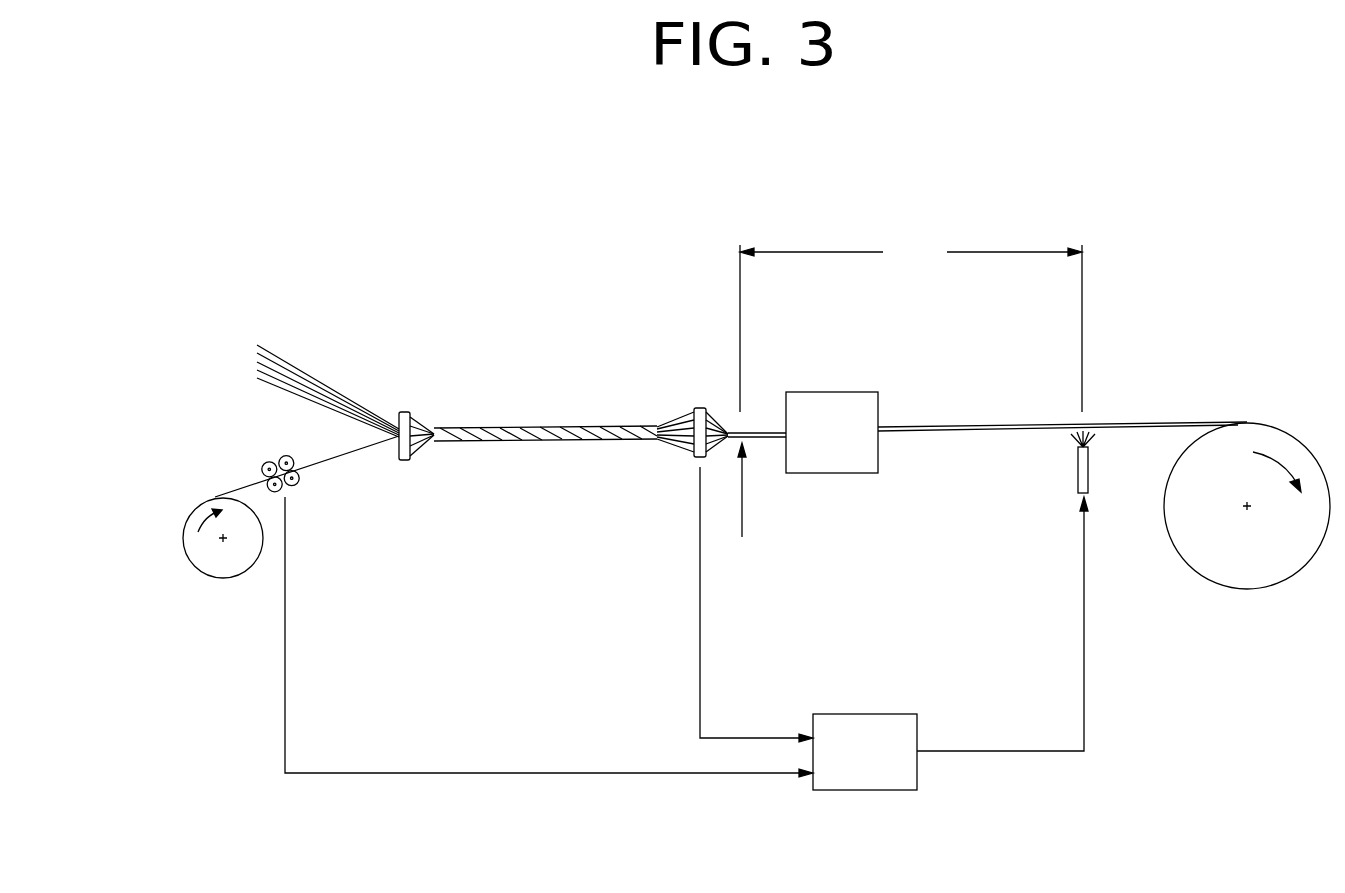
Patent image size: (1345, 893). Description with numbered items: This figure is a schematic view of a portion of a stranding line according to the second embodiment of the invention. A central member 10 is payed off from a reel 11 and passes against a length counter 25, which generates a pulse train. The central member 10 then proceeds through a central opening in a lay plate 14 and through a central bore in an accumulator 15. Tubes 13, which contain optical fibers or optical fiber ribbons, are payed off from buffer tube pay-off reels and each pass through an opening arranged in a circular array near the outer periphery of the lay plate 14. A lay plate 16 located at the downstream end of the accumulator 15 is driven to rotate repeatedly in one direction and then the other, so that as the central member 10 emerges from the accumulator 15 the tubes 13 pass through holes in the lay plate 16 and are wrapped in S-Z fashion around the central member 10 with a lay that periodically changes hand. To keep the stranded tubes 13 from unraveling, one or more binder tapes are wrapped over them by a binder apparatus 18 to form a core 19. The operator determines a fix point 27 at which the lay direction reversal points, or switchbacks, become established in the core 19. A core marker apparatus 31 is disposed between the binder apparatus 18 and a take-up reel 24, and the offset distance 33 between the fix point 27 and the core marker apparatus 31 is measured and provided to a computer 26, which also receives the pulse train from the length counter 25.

The central member 10 is at (337, 457).
The reel 11 is at (223, 560).
The tubes 13 is at (318, 374).
The lay plate 14 is at (409, 413).
The accumulator 15 is at (545, 414).
The lay plate 16 is at (721, 410).
The binder apparatus 18 is at (832, 410).
The core 19 is at (933, 440).
The take-up reel 24 is at (1247, 527).
The length counter 25 is at (268, 458).
The computer 26 is at (686, 628).
The fix point 27 is at (745, 510).
The core marker apparatus 31 is at (1063, 468).
The offset distance 33 is at (911, 323).